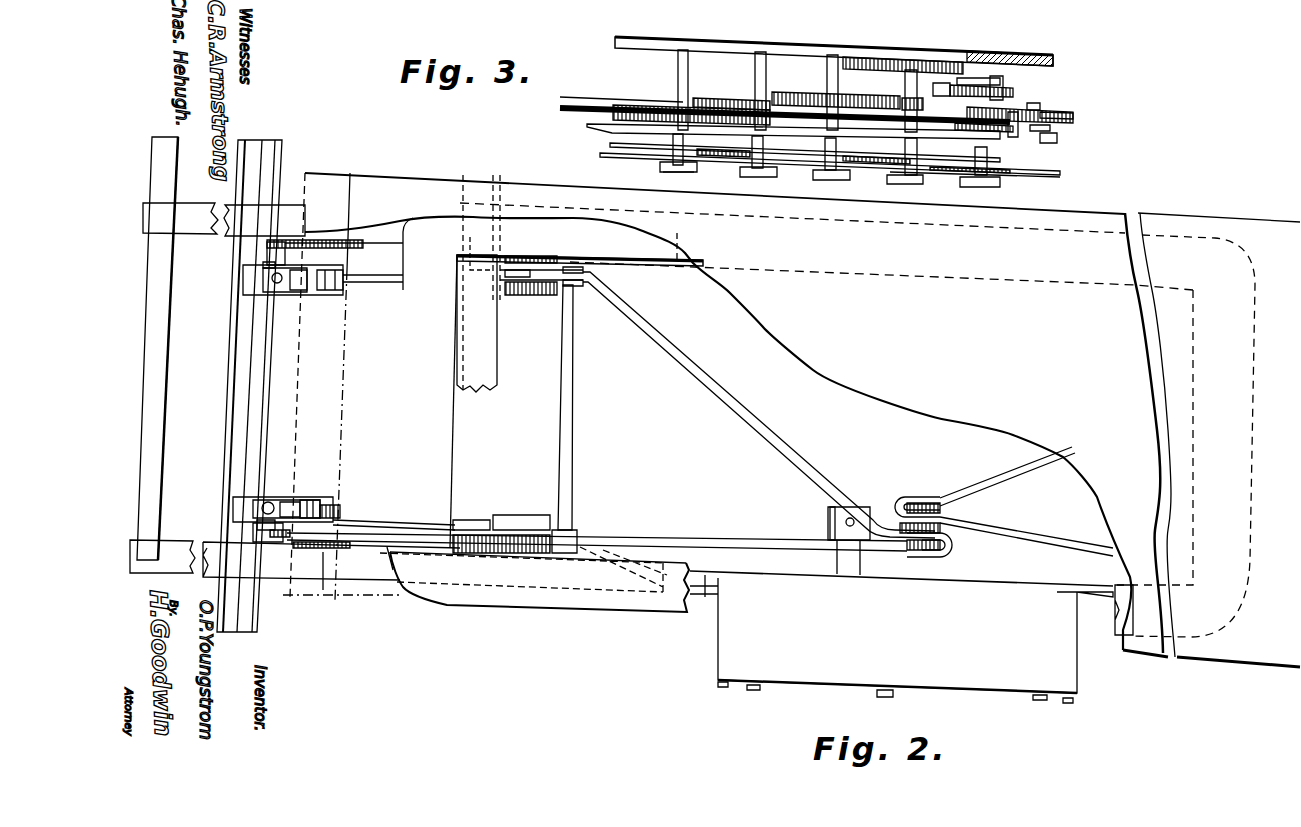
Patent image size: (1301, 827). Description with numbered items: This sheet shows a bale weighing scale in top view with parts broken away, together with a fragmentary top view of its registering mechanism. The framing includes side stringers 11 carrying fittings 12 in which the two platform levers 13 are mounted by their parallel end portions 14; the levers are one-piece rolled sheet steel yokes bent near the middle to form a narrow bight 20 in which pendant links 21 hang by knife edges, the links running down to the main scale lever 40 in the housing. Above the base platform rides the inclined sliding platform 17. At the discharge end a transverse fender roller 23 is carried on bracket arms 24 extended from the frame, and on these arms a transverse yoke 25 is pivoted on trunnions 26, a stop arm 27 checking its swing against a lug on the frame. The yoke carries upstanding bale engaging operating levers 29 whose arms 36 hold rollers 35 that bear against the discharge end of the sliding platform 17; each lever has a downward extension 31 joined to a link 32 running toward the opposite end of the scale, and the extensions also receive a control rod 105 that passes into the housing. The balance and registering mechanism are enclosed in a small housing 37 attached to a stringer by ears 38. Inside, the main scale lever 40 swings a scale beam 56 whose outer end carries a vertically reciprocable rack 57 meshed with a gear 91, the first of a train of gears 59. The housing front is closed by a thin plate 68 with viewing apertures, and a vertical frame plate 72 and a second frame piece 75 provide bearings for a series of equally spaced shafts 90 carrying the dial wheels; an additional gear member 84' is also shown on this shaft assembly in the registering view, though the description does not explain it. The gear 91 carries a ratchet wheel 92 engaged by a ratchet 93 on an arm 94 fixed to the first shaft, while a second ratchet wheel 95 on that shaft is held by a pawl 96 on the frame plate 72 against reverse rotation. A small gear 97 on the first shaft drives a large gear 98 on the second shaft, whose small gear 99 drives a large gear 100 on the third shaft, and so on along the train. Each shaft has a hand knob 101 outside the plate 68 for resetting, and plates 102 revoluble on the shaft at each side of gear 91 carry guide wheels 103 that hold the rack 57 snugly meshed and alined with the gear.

In FIG. 2, the side stringers 11 is at (437, 437).
In FIG. 2, the fittings 12 is at (523, 300).
In FIG. 2, the platform levers 13 is at (694, 370).
In FIG. 2, the end portions 14 is at (543, 298).
In FIG. 2, the sliding platform 17 is at (413, 210).
In FIG. 2, the bight 20 is at (893, 507).
In FIG. 2, the pendant links 21 is at (918, 508).
In FIG. 2, the fender roller 23 is at (163, 393).
In FIG. 2, the bracket arms 24 is at (196, 228).
In FIG. 2, the transverse yoke 25 is at (265, 428).
In FIG. 2, the trunnions 26 is at (278, 245).
In FIG. 2, the stop arm 27 is at (323, 590).
In FIG. 2, the operating levers 29 is at (247, 273).
In FIG. 2, the extension 31 is at (298, 295).
In FIG. 2, the link 32 is at (398, 282).
In FIG. 2, the rollers 35 is at (345, 290).
In FIG. 2, the arms 36 is at (308, 284).
In FIG. 2, the housing 37 is at (735, 640).
In FIG. 2, the ears 38 is at (720, 597).
In FIG. 2, the main scale lever 40 is at (830, 520).
In FIG. 3, the scale beam 56 is at (617, 100).
In FIG. 3, the rack 57 is at (1045, 108).
In FIG. 3, the train of gears 59 is at (865, 165).
In FIG. 3, the plate 68 is at (1003, 185).
In FIG. 3, the frame plate 72 is at (600, 128).
In FIG. 3, the frame piece 75 is at (853, 53).
In FIG. 3, the gear 84' is at (903, 50).
In FIG. 3, the shafts 90 is at (738, 55).
In FIG. 3, the gear 91 is at (1010, 110).
In FIG. 3, the ratchet wheel 92 is at (995, 76).
In FIG. 3, the ratchet 93 is at (950, 62).
In FIG. 3, the arm 94 is at (972, 70).
In FIG. 3, the second ratchet wheel 95 is at (1057, 143).
In FIG. 3, the pawl 96 is at (985, 133).
In FIG. 3, the small gear 97 is at (975, 58).
In FIG. 3, the large gear 98 is at (916, 68).
In FIG. 3, the small gear 99 is at (903, 100).
In FIG. 3, the large gear 100 is at (820, 92).
In FIG. 3, the hand knob 101 is at (747, 170).
In FIG. 3, the plate 102 is at (1073, 112).
In FIG. 3, the guide wheels 103 is at (1070, 117).
In FIG. 2, the control rod 105 is at (385, 570).